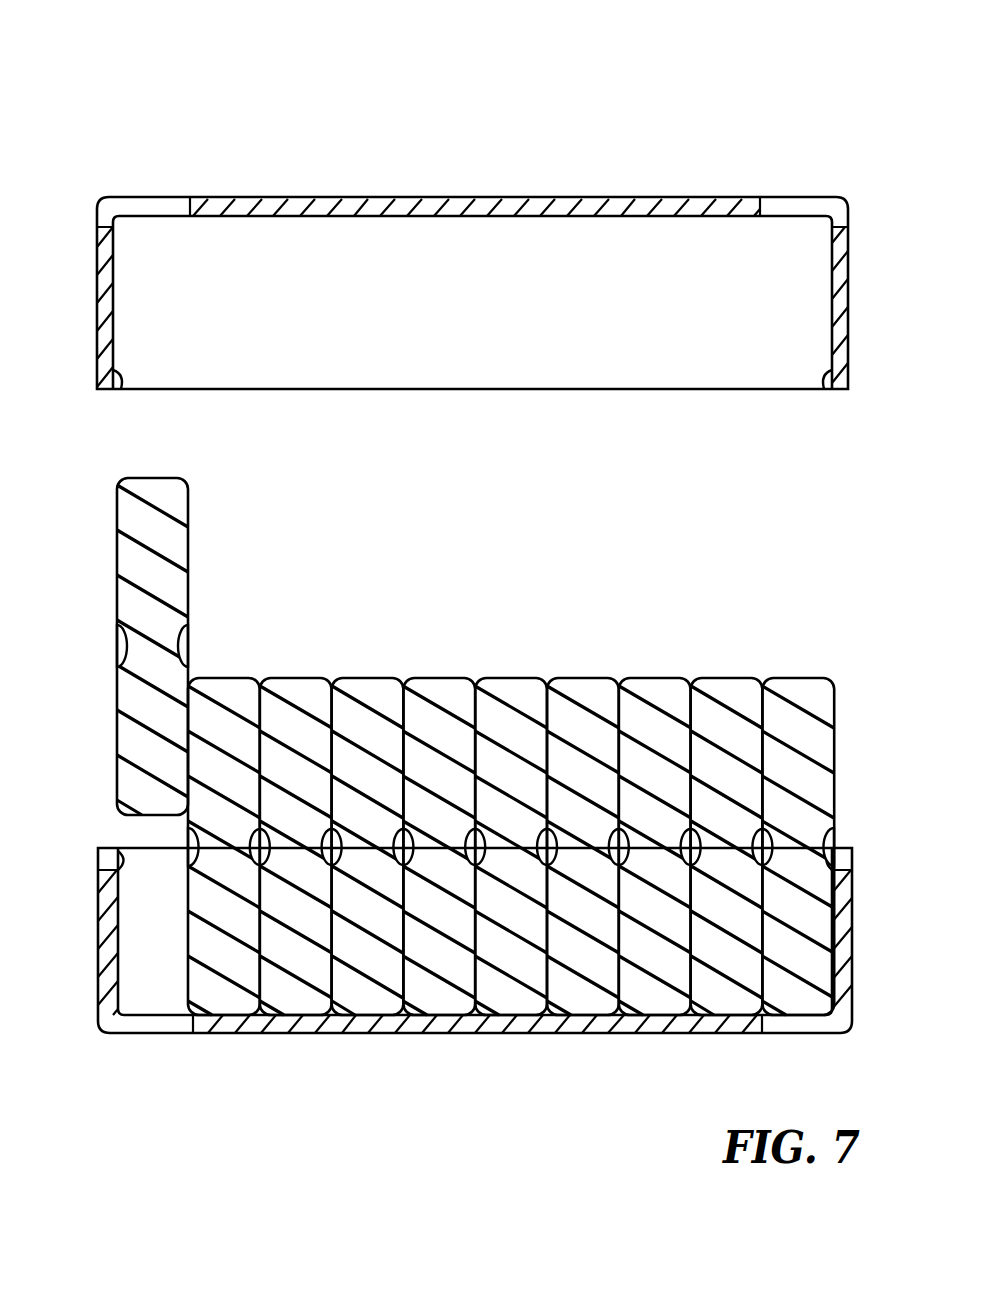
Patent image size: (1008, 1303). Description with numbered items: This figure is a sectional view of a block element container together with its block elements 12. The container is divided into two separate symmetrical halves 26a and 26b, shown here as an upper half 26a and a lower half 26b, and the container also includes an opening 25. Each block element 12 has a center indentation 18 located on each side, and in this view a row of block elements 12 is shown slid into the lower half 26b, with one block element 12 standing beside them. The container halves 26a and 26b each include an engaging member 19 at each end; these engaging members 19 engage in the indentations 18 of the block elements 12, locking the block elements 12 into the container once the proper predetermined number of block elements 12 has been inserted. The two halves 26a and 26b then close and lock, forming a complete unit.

The block element 12 is at (447, 746).
The center indentation 18 is at (117, 645).
The engaging member 19 is at (122, 393).
The opening 25 is at (120, 196).
The block element container half 26a is at (258, 197).
The block element container half 26b is at (262, 1034).